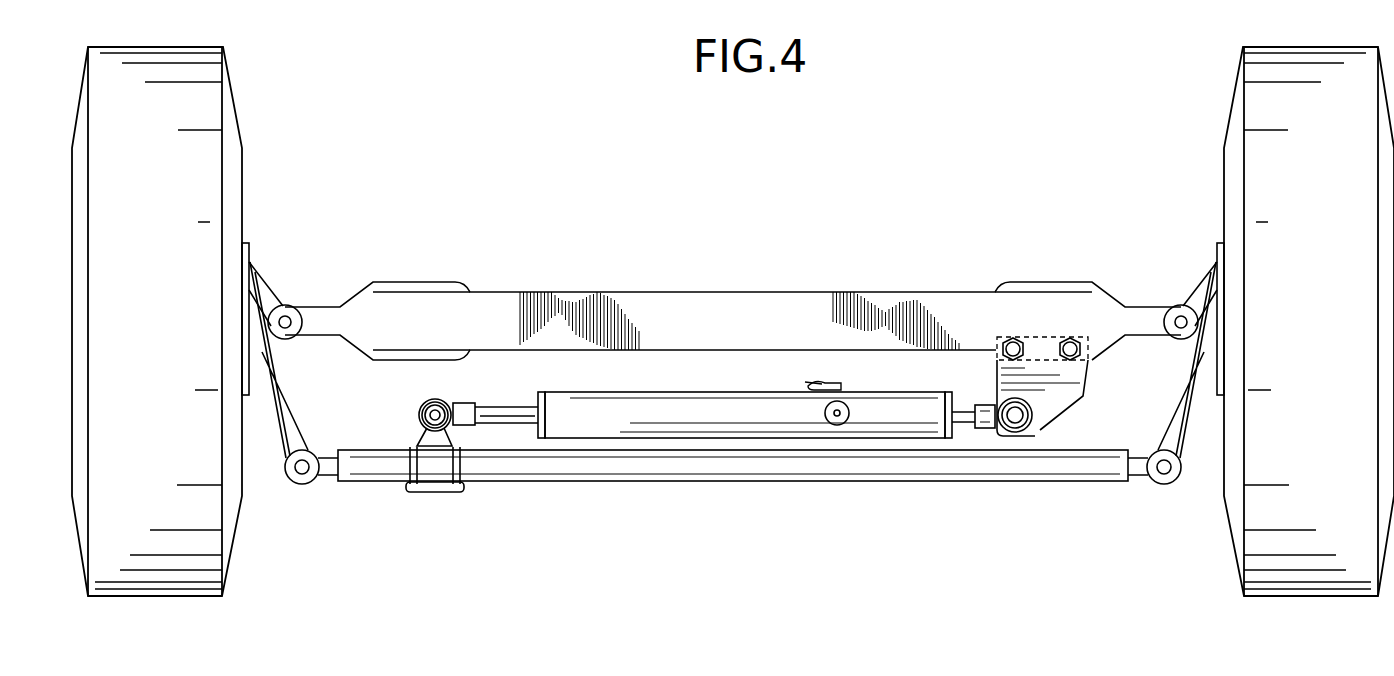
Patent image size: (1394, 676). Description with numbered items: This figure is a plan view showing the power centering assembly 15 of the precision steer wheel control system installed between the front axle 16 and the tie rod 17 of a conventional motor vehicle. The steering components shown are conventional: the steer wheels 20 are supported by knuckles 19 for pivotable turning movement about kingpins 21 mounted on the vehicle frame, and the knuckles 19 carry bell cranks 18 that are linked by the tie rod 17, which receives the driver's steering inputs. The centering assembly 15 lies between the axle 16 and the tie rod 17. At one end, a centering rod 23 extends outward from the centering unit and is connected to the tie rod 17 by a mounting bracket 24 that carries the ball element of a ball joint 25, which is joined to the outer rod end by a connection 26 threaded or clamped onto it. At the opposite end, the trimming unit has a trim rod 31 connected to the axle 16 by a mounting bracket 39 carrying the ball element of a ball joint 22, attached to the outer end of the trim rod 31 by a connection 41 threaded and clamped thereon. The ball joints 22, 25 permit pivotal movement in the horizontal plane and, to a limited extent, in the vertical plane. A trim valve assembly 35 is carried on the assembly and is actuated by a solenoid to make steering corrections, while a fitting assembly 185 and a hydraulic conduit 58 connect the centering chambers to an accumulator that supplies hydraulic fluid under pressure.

The power centering assembly 15 is at (697, 386).
The front axle 16 is at (457, 300).
The tie rod 17 is at (596, 482).
The bell crank 18 is at (304, 415).
The knuckle 19 is at (263, 277).
The steer wheel 20 is at (241, 112).
The kingpin 21 is at (293, 307).
The ball joint 22 is at (1032, 415).
The centering rod 23 is at (513, 412).
The mounting bracket 24 is at (440, 494).
The ball joint 25 is at (420, 414).
The connection 26 is at (470, 404).
The trim rod 31 is at (970, 403).
The trim valve assembly 35 is at (862, 417).
The mounting bracket 39 is at (1084, 400).
The connection 41 is at (990, 430).
The hydraulic conduit 58 is at (808, 385).
The fitting assembly 185 is at (832, 383).